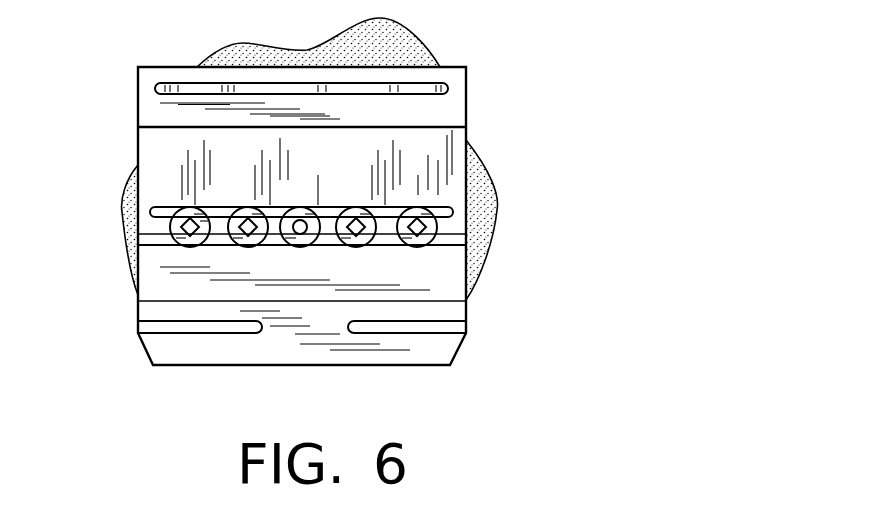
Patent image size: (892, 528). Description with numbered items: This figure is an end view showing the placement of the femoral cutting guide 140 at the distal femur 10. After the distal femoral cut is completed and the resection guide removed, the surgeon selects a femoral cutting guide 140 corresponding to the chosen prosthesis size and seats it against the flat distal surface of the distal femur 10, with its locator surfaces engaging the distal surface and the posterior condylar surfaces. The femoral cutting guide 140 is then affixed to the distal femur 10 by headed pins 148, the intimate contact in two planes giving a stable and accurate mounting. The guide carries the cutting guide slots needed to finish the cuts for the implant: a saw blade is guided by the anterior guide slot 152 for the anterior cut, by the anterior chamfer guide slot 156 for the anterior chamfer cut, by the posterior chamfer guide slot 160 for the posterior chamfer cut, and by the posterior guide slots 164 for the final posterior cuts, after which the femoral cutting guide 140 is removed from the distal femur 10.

The distal femur 10 is at (499, 179).
The femoral cutting guide 140 is at (472, 108).
The headed pins 148 is at (150, 233).
The anterior guide slot 152 is at (293, 90).
The anterior chamfer guide slot 156 is at (205, 208).
The posterior chamfer guide slot 160 is at (217, 238).
The posterior guide slots 164 is at (225, 330).